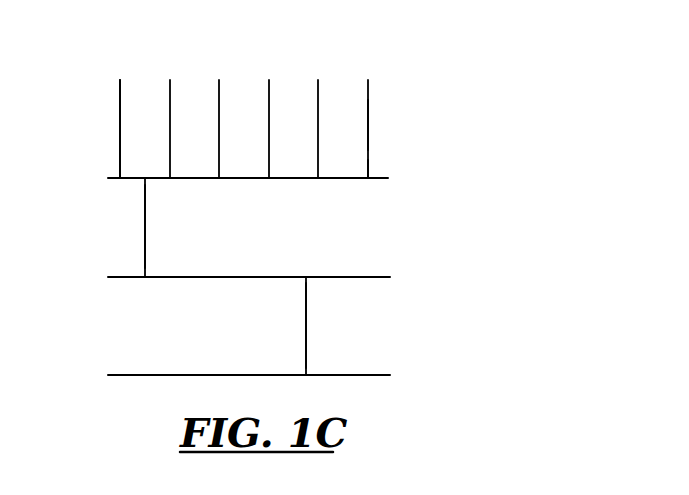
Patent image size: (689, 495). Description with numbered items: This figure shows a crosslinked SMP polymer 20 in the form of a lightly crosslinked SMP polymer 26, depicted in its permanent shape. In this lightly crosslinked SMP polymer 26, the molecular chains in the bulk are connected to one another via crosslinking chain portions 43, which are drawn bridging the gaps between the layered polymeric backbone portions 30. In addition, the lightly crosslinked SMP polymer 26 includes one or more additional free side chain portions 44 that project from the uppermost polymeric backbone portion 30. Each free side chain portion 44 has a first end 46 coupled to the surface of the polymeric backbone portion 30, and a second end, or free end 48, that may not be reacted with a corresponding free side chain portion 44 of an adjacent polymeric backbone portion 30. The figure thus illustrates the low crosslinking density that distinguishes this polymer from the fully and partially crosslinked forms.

The crosslinked SMP polymer 20 is at (158, 58).
The lightly crosslinked SMP polymer 26 is at (279, 55).
The polymeric backbone portion 30 is at (233, 180).
The crosslinking chain portions 43 is at (133, 186).
The free side chain portions 44 is at (368, 128).
The first end 46 is at (368, 176).
The free end 48 is at (368, 80).